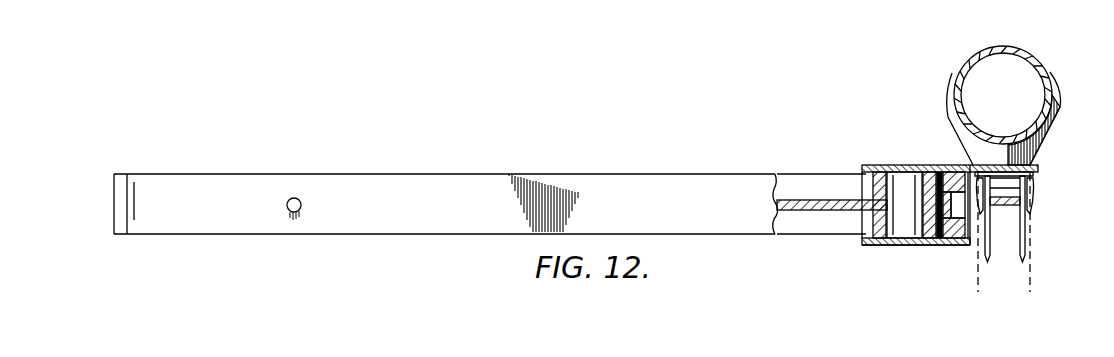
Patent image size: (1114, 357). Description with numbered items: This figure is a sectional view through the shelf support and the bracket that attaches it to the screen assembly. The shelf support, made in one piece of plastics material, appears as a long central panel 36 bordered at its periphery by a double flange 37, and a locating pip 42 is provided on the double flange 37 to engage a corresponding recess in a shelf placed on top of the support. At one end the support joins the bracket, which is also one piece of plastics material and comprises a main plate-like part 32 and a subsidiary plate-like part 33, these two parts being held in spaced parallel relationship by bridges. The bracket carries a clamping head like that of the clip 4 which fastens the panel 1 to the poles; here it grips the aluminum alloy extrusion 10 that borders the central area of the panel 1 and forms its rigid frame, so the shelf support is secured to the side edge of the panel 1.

The panel 1 is at (1018, 282).
The clip 4 is at (1036, 147).
The aluminum alloy extrusion 10 is at (1025, 224).
The main plate-like part 32 is at (900, 165).
The subsidiary plate-like part 33 is at (908, 247).
The central panel 36 is at (808, 200).
The double flange 37 is at (765, 182).
The locating pips 42 is at (301, 203).